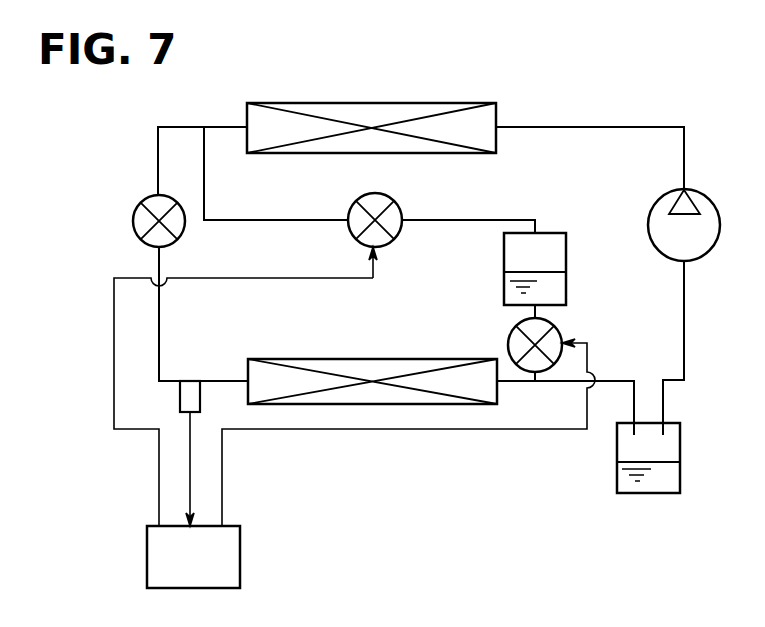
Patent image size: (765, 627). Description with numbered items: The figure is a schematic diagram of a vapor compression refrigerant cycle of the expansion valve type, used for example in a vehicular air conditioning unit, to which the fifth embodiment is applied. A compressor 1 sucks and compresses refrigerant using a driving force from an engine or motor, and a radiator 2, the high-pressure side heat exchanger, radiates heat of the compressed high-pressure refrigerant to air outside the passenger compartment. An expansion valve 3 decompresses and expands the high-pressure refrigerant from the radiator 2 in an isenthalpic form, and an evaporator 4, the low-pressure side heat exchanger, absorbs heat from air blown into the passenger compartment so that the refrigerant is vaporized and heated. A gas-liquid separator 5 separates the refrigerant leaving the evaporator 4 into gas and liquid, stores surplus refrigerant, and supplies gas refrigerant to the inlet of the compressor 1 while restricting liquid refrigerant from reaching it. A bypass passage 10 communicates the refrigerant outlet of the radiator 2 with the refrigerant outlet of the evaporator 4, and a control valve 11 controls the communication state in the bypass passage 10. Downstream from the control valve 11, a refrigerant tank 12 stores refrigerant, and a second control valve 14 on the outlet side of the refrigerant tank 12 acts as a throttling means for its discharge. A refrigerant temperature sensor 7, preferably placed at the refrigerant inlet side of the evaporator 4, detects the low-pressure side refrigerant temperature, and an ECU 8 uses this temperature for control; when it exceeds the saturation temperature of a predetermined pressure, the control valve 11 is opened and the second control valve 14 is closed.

The compressor 1 is at (720, 225).
The radiator 2 is at (433, 103).
The expansion valve 3 is at (133, 220).
The evaporator 4 is at (433, 359).
The gas-liquid separator 5 is at (680, 465).
The refrigerant temperature sensor 7 is at (180, 398).
The ECU 8 is at (240, 558).
The bypass passage 10 is at (502, 218).
The control valve 11 is at (370, 195).
The refrigerant tank 12 is at (566, 278).
The second control valve 14 is at (549, 322).